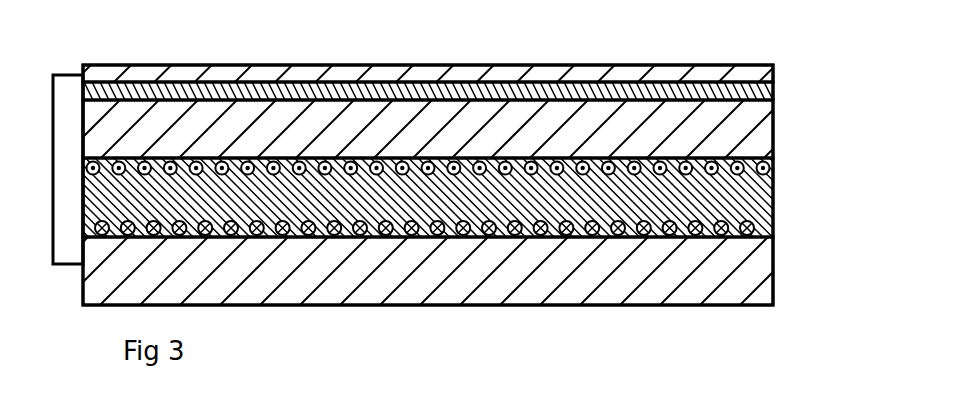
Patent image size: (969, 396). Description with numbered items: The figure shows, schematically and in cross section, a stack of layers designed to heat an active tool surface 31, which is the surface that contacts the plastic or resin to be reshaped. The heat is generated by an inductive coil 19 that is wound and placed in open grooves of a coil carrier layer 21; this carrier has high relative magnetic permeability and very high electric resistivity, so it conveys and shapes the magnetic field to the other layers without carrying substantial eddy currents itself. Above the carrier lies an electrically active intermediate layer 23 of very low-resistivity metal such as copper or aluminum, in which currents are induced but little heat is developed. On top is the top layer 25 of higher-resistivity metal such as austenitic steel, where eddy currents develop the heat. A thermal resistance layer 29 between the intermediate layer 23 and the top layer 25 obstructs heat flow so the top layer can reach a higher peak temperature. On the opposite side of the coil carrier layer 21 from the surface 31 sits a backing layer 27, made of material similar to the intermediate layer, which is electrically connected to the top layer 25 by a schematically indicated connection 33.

The active tool surface 31 is at (548, 64).
The top layer 25 is at (745, 72).
The thermal resistance layer 29 is at (762, 89).
The electrically active intermediate layer 23 is at (733, 124).
The inductive coil 19 is at (777, 159).
The coil carrier layer 21 is at (752, 198).
The backing layer 27 is at (756, 283).
The connection 33 is at (45, 249).